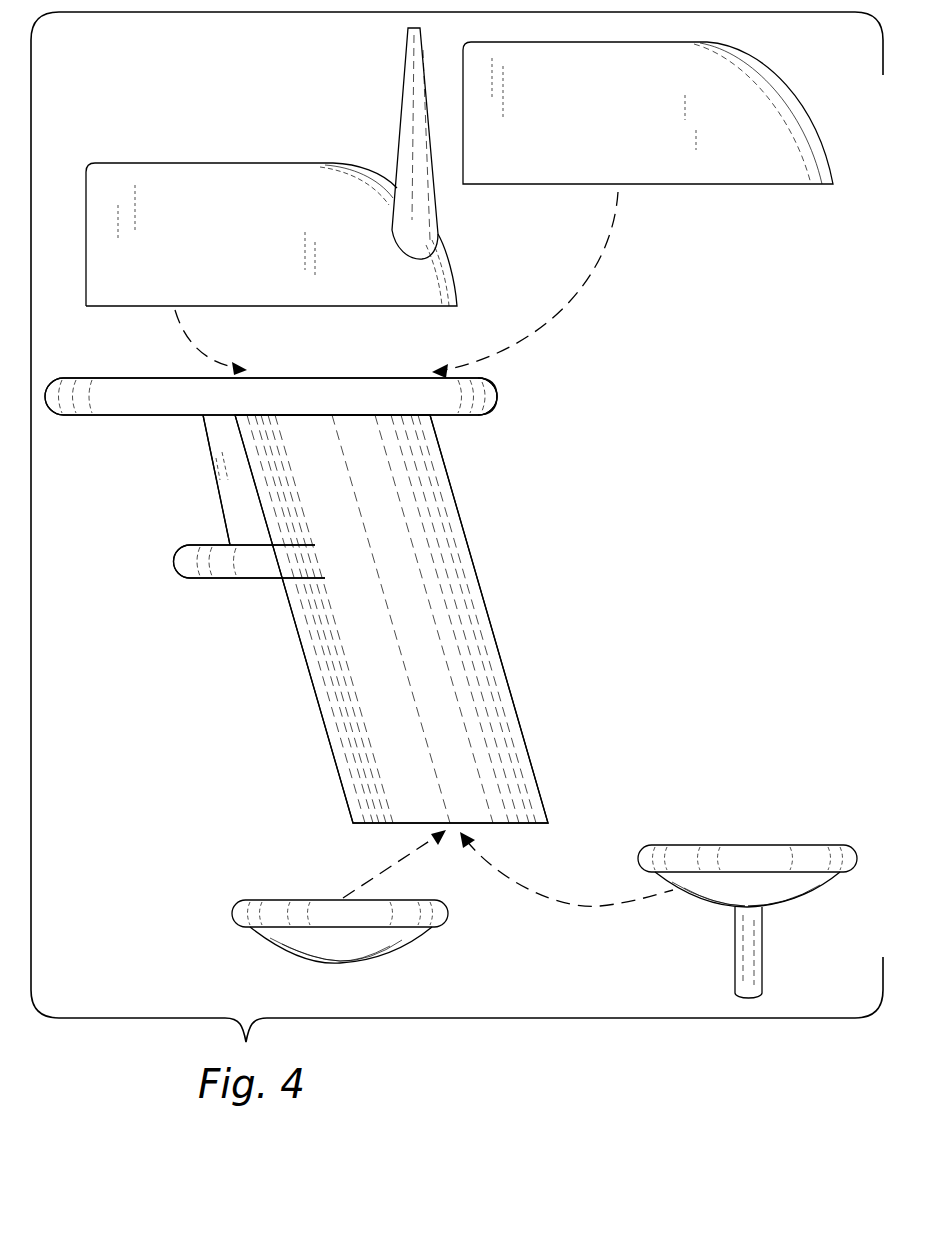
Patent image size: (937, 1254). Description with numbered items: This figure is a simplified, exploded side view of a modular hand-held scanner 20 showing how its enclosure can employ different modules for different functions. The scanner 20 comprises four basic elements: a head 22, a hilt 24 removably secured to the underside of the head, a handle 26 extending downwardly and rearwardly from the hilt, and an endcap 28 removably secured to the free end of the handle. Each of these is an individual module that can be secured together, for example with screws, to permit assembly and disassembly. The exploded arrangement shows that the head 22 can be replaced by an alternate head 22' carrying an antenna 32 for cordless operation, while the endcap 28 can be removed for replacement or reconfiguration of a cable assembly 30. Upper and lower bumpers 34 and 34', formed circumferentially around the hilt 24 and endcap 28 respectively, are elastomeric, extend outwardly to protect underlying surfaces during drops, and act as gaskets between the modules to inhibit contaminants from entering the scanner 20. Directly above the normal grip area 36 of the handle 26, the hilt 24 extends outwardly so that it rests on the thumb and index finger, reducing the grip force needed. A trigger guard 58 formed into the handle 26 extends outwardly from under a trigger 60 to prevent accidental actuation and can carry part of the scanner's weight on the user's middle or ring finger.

The scanner 20 is at (643, 466).
The head 22 is at (648, 147).
The head 22' is at (271, 203).
The hilt 24 is at (160, 407).
The handle 26 is at (460, 583).
The endcap 28 is at (288, 898).
The cable assembly 30 is at (757, 955).
The antenna 32 is at (407, 133).
The upper bumper 34 is at (508, 419).
The lower bumper 34' is at (508, 855).
The normal grip area 36 is at (140, 497).
The trigger guard 58 is at (187, 558).
The trigger 60 is at (232, 500).